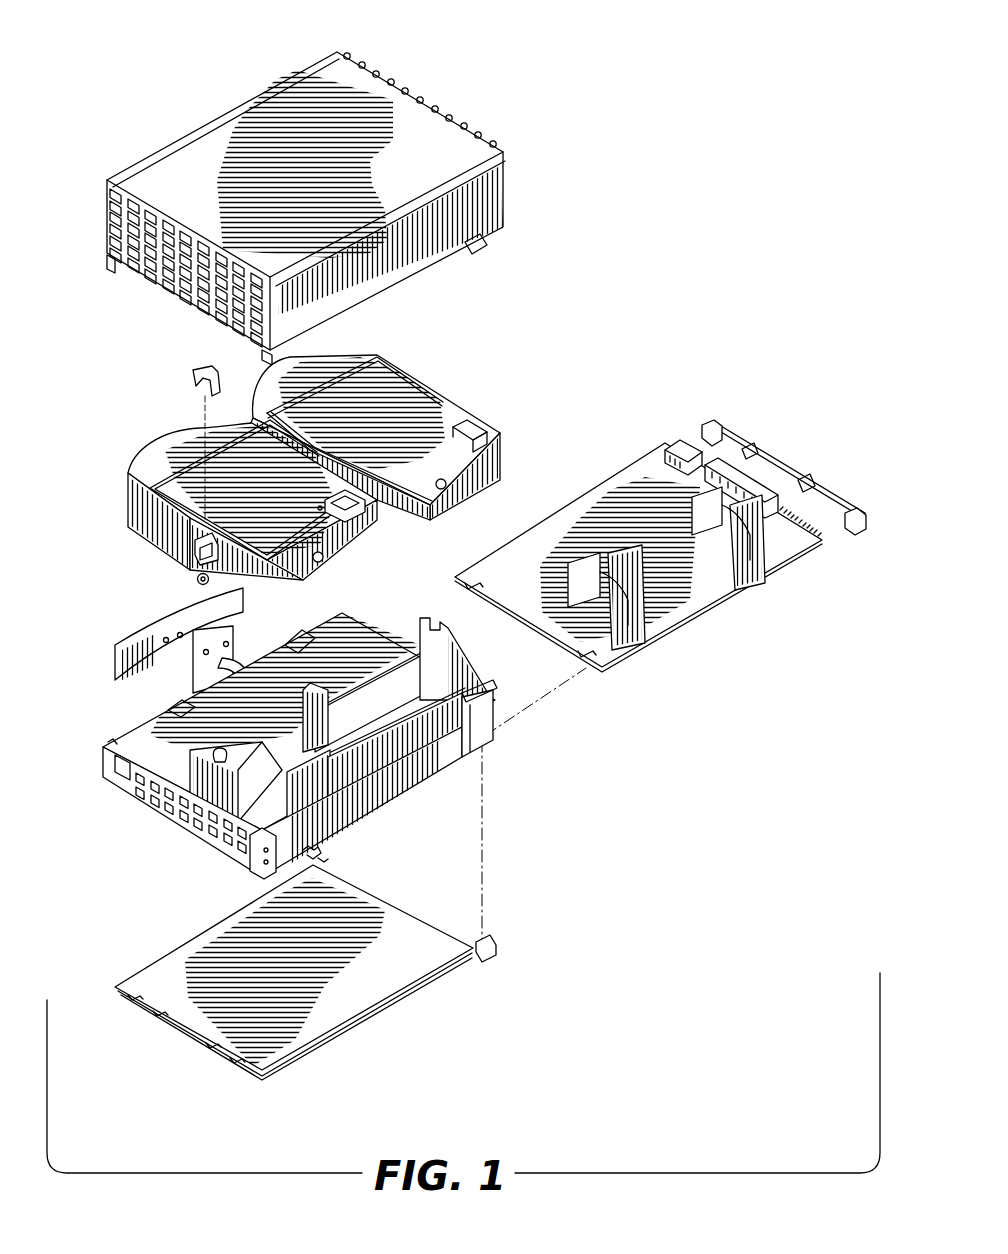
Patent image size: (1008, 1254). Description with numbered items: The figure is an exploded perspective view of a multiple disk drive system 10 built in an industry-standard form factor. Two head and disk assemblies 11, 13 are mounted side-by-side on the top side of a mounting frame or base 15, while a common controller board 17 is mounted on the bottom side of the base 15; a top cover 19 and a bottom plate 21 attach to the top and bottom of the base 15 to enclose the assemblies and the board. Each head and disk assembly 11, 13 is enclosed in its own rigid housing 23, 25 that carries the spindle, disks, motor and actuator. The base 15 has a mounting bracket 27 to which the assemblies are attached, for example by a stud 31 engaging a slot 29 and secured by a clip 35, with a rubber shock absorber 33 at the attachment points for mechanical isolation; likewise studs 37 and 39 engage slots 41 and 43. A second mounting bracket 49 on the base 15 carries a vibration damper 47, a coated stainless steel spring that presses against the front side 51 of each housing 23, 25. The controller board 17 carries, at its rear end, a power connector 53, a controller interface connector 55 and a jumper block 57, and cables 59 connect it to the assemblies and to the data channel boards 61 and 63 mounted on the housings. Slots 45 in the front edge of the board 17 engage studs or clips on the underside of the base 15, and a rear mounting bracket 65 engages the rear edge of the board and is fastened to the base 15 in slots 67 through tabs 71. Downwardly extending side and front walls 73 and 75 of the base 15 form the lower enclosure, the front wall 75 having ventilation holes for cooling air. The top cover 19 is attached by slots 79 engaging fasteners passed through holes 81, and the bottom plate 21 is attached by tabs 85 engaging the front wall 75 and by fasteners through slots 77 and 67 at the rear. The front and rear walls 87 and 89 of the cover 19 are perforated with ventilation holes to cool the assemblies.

The multiple disk drive system 10 is at (733, 742).
The head and disk assembly 11 is at (389, 419).
The head and disk assembly 13 is at (242, 505).
The base 15 is at (309, 746).
The controller board 17 is at (650, 552).
The top cover 19 is at (311, 196).
The bottom plate 21 is at (323, 979).
The housing 23 is at (386, 368).
The housing 25 is at (165, 520).
The mounting bracket 27 is at (380, 797).
The slot 29 is at (205, 778).
The stud 31 is at (200, 552).
The rubber shock absorber 33 is at (197, 581).
The clip 35 is at (192, 372).
The stud 37 is at (446, 488).
The stud 39 is at (323, 562).
The slot 41 is at (432, 742).
The slot 43 is at (337, 792).
The slots 45 is at (470, 592).
The vibration damper 47 is at (152, 618).
The mounting bracket 49 is at (190, 668).
The front side 51 is at (183, 431).
The power connector 53 is at (672, 446).
The controller interface connector 55 is at (730, 468).
The jumper block 57 is at (808, 545).
The cables 59 is at (640, 540).
The data channel board 61 is at (445, 442).
The data channel board 63 is at (352, 522).
The rear mounting bracket 65 is at (800, 460).
The slots 67 is at (494, 750).
The tabs 71 is at (712, 424).
The side walls 73 is at (462, 772).
The front wall 75 is at (120, 810).
The slots 77 is at (492, 940).
The slots 79 is at (488, 250).
The holes 81 is at (482, 708).
The tabs 85 is at (210, 1065).
The front wall 87 is at (132, 285).
The rear wall 89 is at (410, 72).